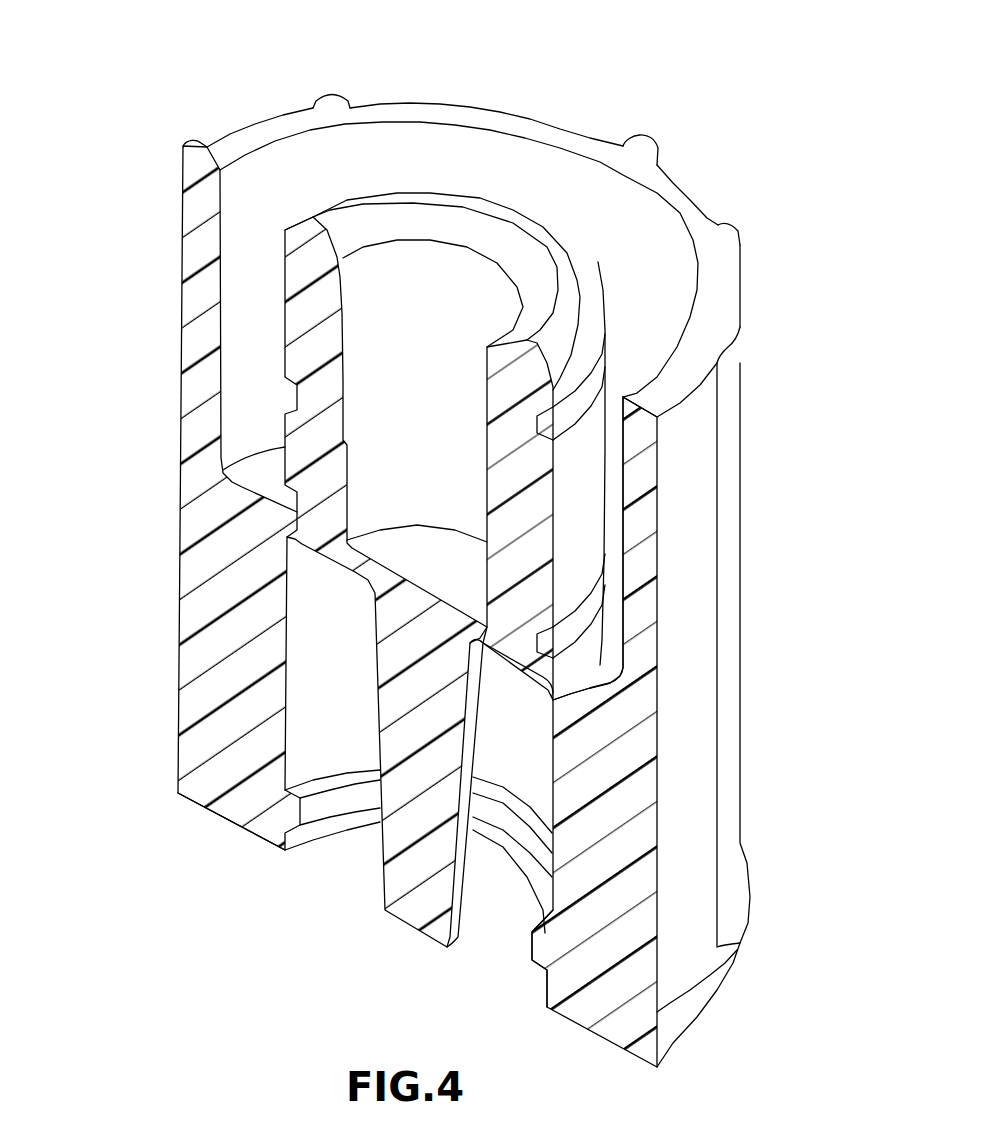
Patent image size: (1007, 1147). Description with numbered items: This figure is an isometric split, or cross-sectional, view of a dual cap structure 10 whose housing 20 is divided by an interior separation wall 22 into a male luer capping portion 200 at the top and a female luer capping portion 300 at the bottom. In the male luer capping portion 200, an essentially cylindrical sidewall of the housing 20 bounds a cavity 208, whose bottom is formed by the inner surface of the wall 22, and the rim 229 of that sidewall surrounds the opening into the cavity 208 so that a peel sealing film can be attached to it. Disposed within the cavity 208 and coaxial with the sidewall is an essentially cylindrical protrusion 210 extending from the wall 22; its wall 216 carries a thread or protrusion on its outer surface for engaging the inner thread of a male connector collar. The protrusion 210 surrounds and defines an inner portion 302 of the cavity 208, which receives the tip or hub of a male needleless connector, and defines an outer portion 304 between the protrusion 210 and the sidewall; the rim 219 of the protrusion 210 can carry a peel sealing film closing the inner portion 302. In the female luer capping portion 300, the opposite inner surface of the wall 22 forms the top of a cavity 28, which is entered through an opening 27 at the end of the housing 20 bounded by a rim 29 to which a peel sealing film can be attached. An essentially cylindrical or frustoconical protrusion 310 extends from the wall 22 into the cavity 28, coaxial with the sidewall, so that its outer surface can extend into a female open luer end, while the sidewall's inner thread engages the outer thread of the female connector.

The dual cap structure 10 is at (236, 77).
The housing 20 is at (749, 590).
The wall 22 is at (437, 612).
The opening 27 is at (537, 973).
The cavity 28 is at (312, 768).
The rim 29 is at (218, 808).
The male luer capping portion 200 is at (132, 182).
The cavity 208 is at (553, 180).
The protrusion 210 is at (553, 250).
The wall 216 is at (513, 388).
The rim 219 is at (587, 290).
The rim 229 is at (463, 113).
The female luer capping portion 300 is at (132, 505).
The inner portion 302 is at (402, 270).
The outer portion 304 is at (382, 147).
The protrusion 310 is at (468, 768).